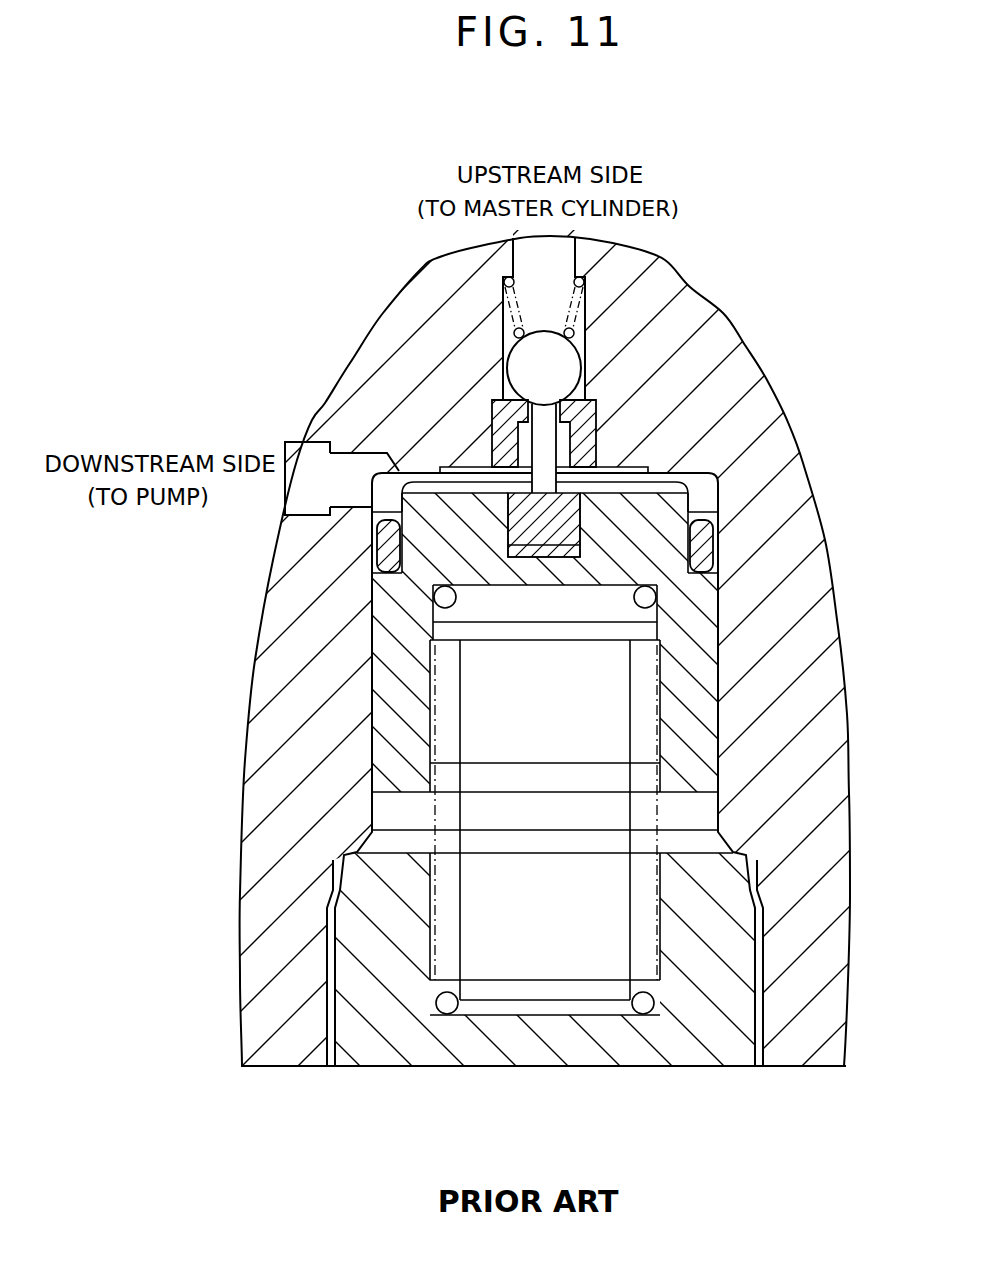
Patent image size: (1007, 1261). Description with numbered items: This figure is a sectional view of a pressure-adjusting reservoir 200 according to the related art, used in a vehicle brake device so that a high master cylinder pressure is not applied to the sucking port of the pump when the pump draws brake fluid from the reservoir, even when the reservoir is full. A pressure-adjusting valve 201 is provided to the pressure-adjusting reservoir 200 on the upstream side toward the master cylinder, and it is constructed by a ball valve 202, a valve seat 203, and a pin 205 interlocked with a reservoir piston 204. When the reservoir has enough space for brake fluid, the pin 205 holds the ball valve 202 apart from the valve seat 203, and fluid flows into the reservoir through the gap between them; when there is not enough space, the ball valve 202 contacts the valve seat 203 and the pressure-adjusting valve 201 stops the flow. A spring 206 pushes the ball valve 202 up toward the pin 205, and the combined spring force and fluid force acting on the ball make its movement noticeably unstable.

The pressure-adjusting reservoir 200 is at (368, 701).
The pressure-adjusting valve 201 is at (488, 385).
The ball valve 202 is at (568, 363).
The valve seat 203 is at (491, 416).
The reservoir piston 204 is at (393, 649).
The pin 205 is at (548, 452).
The spring 206 is at (572, 308).